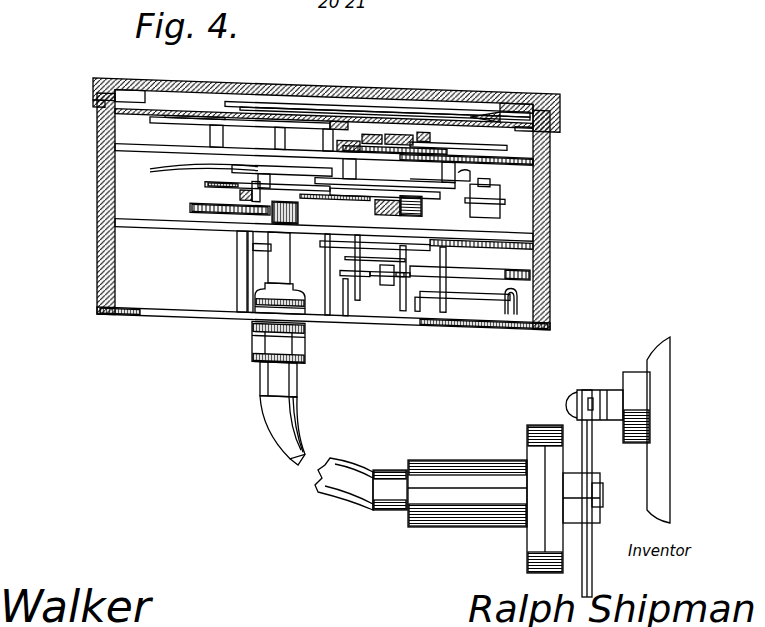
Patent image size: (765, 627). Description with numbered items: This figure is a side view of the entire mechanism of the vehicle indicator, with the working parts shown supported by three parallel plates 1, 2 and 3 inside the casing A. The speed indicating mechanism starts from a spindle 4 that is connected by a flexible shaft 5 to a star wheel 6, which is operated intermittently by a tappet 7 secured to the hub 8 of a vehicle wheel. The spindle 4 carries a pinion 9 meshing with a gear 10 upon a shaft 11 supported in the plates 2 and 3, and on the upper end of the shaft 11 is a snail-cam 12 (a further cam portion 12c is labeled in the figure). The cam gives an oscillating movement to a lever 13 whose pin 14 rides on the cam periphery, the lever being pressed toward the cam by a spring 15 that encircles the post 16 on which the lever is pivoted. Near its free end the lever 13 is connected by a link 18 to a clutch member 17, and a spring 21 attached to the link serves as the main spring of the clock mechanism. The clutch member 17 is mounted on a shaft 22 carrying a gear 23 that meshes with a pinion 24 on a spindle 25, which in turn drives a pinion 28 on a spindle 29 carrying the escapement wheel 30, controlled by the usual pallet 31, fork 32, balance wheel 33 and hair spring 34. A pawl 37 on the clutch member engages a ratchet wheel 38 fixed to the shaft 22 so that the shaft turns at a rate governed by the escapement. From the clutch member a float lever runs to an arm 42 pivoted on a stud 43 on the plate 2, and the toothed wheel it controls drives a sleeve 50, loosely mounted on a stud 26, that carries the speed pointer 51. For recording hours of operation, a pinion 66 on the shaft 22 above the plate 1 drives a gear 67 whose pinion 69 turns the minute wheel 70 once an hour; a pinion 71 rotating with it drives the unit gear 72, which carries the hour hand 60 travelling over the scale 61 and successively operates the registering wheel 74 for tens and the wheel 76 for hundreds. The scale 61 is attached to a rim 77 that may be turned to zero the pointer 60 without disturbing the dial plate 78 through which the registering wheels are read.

The casing A is at (325, 189).
The plate 1 is at (545, 180).
The plate 2 is at (97, 228).
The plate 3 is at (323, 304).
The spindle 4 is at (270, 256).
The flexible shaft 5 is at (303, 411).
The star wheel 6 is at (592, 555).
The tappet 7 is at (586, 390).
The hub 8 is at (656, 350).
The pinion 9 is at (272, 205).
The gear 10 is at (195, 205).
The shaft 11 is at (240, 260).
The snail-cam 12 is at (205, 180).
The block 12c is at (240, 190).
The lever 13 is at (363, 181).
The pin 14 is at (262, 164).
The spring 15 is at (470, 226).
The post 16 is at (470, 165).
The clutch member 17 is at (380, 200).
The link 18 is at (190, 162).
The spring 21 is at (300, 133).
The shaft 22 is at (343, 226).
The gear 23 is at (400, 236).
The pinion 24 is at (247, 300).
The spindle 25 is at (310, 279).
The stud 26 is at (328, 101).
The pinion 28 is at (347, 240).
The spindle 29 is at (346, 300).
The escapement wheel 30 is at (386, 262).
The pallet 31 is at (403, 300).
The fork 32 is at (443, 300).
The balance wheel 33 is at (531, 260).
The hair spring 34 is at (508, 293).
The pawl 37 is at (405, 202).
The ratchet wheel 38 is at (388, 204).
The arm 42 is at (500, 189).
The stud 43 is at (490, 203).
The sleeve 50 is at (342, 131).
The pointer 51 is at (290, 97).
The hour hand 60 is at (170, 107).
The scale 61 is at (150, 95).
The pinion 66 is at (368, 124).
The gear 67 is at (468, 106).
The pinion 69 is at (396, 136).
The minute wheel 70 is at (534, 146).
The pinion 71 is at (424, 120).
The unit gear 72 is at (400, 123).
The registering wheel 74 is at (271, 139).
The wheel 76 is at (180, 121).
The rim 77 is at (558, 84).
The dial plate 78 is at (501, 100).